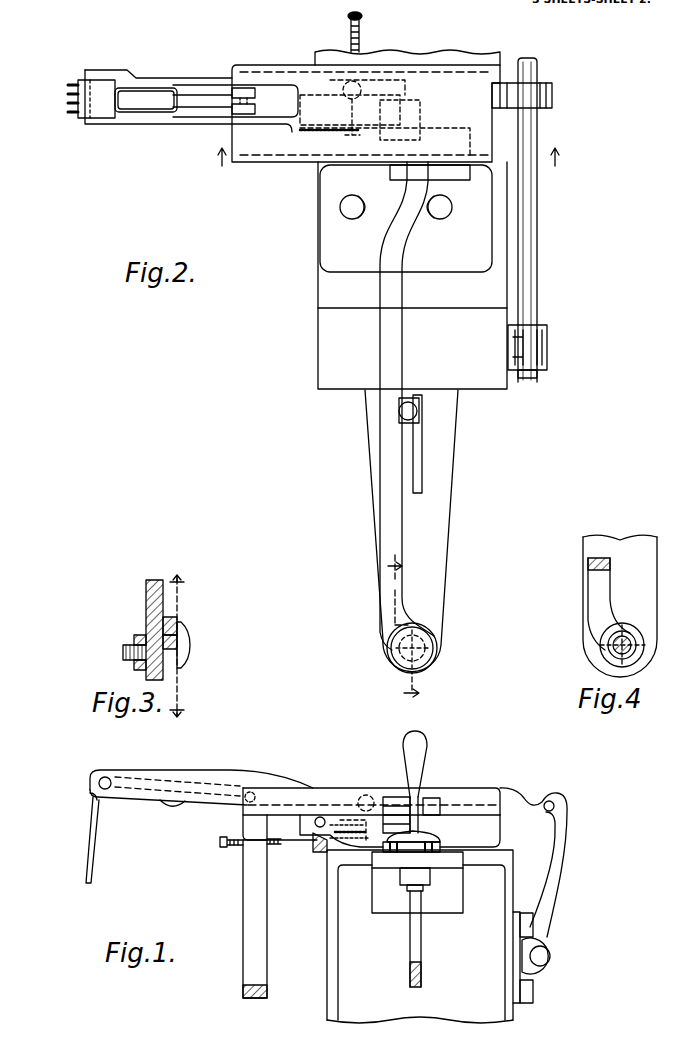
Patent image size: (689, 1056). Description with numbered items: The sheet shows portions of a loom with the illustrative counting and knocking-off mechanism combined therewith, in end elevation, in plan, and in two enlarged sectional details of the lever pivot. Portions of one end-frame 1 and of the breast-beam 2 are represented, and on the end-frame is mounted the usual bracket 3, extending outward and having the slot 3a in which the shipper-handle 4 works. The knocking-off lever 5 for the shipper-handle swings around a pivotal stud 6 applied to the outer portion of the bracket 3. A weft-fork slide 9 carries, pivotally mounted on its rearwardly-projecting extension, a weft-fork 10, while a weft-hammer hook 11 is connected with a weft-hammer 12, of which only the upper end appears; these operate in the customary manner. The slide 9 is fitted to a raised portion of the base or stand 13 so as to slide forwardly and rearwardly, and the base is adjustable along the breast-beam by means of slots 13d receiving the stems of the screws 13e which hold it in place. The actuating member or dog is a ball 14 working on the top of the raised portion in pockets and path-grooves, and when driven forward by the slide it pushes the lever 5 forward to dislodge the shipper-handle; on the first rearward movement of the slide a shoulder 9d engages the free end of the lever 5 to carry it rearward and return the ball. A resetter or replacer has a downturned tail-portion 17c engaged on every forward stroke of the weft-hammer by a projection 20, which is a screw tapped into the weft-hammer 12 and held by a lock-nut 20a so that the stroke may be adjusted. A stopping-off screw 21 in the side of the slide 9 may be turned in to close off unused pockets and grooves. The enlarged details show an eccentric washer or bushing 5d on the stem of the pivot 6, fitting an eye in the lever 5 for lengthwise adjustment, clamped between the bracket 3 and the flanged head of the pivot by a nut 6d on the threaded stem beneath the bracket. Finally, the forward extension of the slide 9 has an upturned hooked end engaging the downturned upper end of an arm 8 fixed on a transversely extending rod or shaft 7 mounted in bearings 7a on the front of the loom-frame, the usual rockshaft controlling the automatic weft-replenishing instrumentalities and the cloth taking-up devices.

In FIG. 2, the end-frame 1 is at (316, 346).
In FIG. 1, the end-frame 1 is at (326, 1016).
In FIG. 2, the breast-beam 2 is at (316, 284).
In FIG. 2, the bracket 3 is at (447, 503).
In FIG. 3, the bracket 3 is at (146, 600).
In FIG. 4, the bracket 3 is at (645, 565).
In FIG. 1, the bracket 3 is at (460, 870).
In FIG. 2, the slot 3a is at (420, 455).
In FIG. 2, the shipper-handle 4 is at (415, 410).
In FIG. 1, the shipper-handle 4 is at (428, 760).
In FIG. 2, the knocking-off lever 5 is at (424, 340).
In FIG. 3, the knocking-off lever 5 is at (177, 618).
In FIG. 4, the knocking-off lever 5 is at (600, 586).
In FIG. 3, the eccentric washer or bushing 5d is at (178, 642).
In FIG. 4, the eccentric washer or bushing 5d is at (613, 645).
In FIG. 2, the pivotal stud 6 is at (420, 640).
In FIG. 3, the pivotal stud 6 is at (190, 645).
In FIG. 1, the pivotal stud 6 is at (425, 838).
In FIG. 3, the nut 6d is at (134, 640).
In FIG. 2, the rod or shaft 7 is at (542, 282).
In FIG. 1, the rod or shaft 7 is at (548, 957).
In FIG. 2, the bearings 7a is at (549, 352).
In FIG. 1, the bearings 7a is at (555, 975).
In FIG. 2, the arm 8 is at (555, 98).
In FIG. 1, the arm 8 is at (565, 850).
In FIG. 2, the weft-fork slide 9 is at (445, 65).
In FIG. 1, the weft-fork slide 9 is at (490, 790).
In FIG. 1, the shoulder 9d is at (448, 800).
In FIG. 2, the weft-fork 10 is at (72, 100).
In FIG. 1, the weft-fork 10 is at (92, 826).
In FIG. 2, the weft-hammer hook 11 is at (194, 85).
In FIG. 1, the weft-hammer hook 11 is at (215, 785).
In FIG. 2, the weft-hammer 12 is at (253, 90).
In FIG. 1, the weft-hammer 12 is at (243, 908).
In FIG. 2, the base or stand 13 is at (330, 184).
In FIG. 1, the base or stand 13 is at (478, 836).
In FIG. 2, the slots 13d is at (340, 212).
In FIG. 2, the screws 13e is at (350, 218).
In FIG. 2, the ball 14 is at (362, 86).
In FIG. 1, the ball 14 is at (366, 795).
In FIG. 1, the tail-portion 17c is at (318, 852).
In FIG. 1, the projection 20 is at (278, 848).
In FIG. 1, the lock-nut 20a is at (238, 848).
In FIG. 2, the screw 21 is at (363, 42).